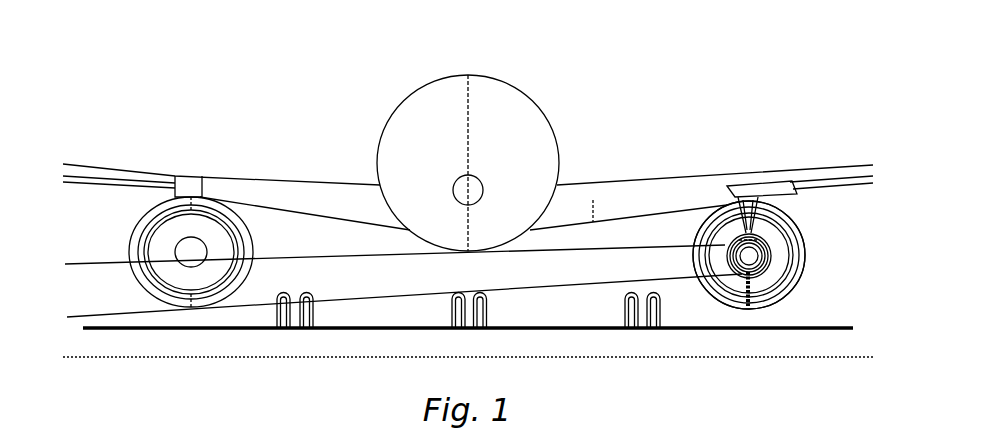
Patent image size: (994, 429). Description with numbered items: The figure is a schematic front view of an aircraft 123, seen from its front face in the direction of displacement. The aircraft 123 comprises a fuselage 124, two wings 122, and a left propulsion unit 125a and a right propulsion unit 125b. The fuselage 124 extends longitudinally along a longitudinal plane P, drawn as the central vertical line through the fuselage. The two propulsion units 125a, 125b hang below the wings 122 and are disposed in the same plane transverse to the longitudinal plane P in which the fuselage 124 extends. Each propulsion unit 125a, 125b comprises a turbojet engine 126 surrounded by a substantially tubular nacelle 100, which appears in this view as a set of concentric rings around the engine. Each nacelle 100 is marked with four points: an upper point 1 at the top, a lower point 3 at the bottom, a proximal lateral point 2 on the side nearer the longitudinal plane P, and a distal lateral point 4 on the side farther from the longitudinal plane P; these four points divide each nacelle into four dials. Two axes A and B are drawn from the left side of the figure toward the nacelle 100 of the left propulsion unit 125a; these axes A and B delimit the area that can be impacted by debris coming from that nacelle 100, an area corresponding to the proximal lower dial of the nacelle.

The upper point 1 is at (200, 193).
The proximal lateral point 2 is at (263, 253).
The lower point 3 is at (192, 307).
The distal lateral point 4 is at (443, 266).
The nacelle 100 is at (247, 227).
The wings 122 is at (320, 198).
The aircraft 123 is at (468, 128).
The fuselage 124 is at (495, 150).
The left propulsion unit 125a is at (445, 261).
The right propulsion unit 125b is at (825, 215).
The turbojet engine 126 is at (173, 247).
The axis A is at (65, 264).
The axis B is at (70, 317).
The longitudinal plane P is at (472, 97).